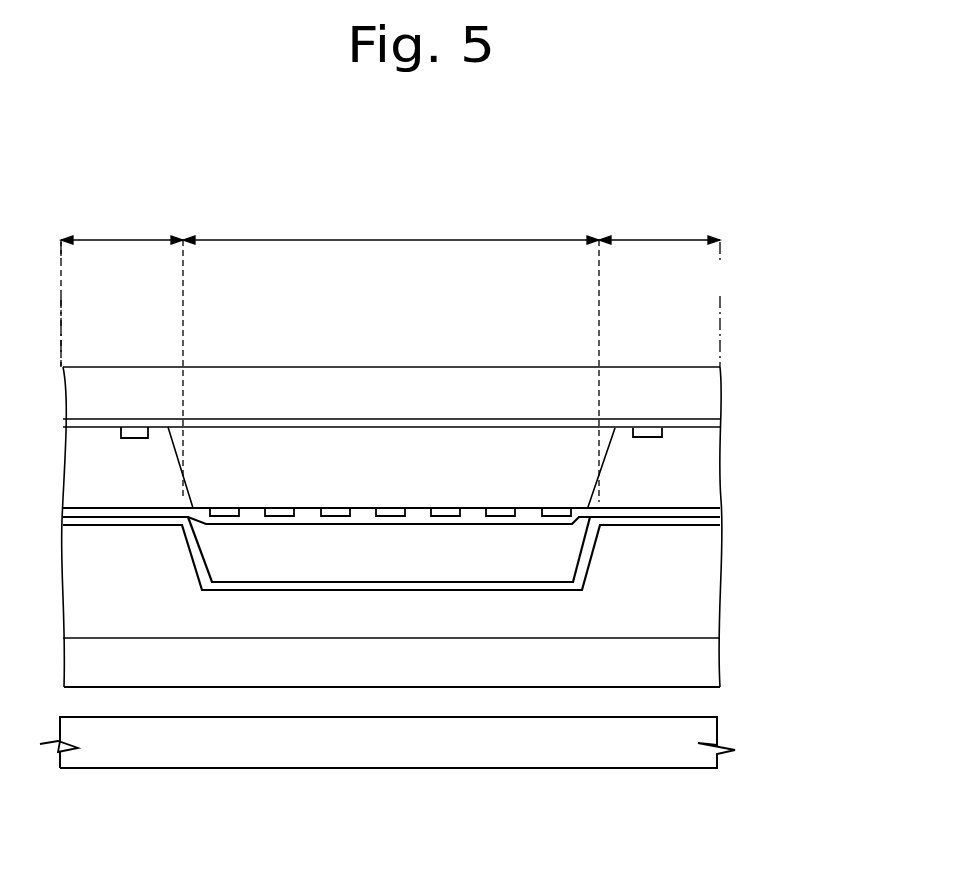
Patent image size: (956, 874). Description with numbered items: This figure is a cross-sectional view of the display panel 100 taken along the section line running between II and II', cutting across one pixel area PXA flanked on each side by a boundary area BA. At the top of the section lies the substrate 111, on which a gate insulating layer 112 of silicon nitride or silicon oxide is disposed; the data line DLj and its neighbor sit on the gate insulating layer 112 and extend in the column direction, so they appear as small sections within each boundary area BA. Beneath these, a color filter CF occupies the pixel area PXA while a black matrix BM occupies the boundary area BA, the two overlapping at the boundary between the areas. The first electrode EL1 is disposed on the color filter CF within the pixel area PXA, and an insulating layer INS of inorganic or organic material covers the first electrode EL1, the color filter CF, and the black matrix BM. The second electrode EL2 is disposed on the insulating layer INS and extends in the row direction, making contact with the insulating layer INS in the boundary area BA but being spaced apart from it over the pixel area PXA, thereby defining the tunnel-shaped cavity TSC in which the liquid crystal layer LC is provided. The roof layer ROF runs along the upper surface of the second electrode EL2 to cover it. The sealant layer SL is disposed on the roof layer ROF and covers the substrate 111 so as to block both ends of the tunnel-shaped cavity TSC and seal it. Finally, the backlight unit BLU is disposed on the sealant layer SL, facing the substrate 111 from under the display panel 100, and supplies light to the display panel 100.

The display panel 100 is at (803, 383).
The substrate 111 is at (702, 393).
The gate insulating layer 112 is at (702, 425).
The black matrix BM is at (702, 458).
The color filter CF is at (470, 447).
The data line DLj is at (132, 430).
The insulating layer INS is at (707, 513).
The first electrode EL1 is at (336, 510).
The second electrode EL2 is at (707, 521).
The roof layer ROF is at (703, 592).
The liquid crystal layer LC is at (302, 558).
The tunnel-shaped cavity TSC is at (463, 571).
The sealant layer SL is at (708, 664).
The backlight unit BLU is at (703, 730).
The boundary area BA is at (390, 291).
The pixel area PXA is at (391, 360).
The section line II is at (60, 304).
The section line II' is at (725, 304).